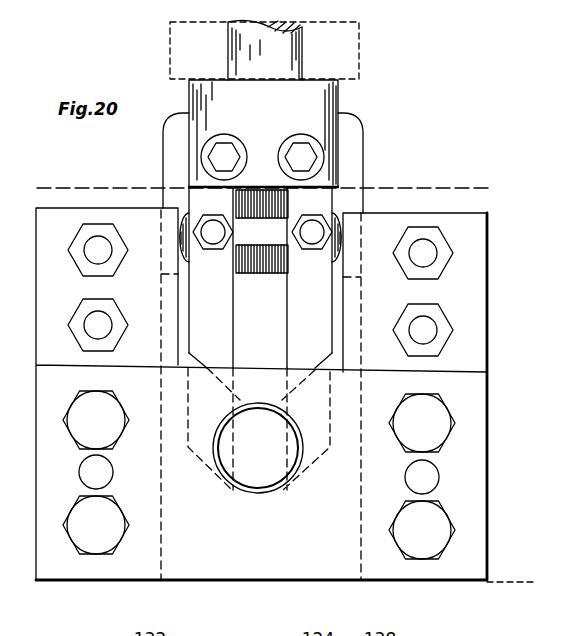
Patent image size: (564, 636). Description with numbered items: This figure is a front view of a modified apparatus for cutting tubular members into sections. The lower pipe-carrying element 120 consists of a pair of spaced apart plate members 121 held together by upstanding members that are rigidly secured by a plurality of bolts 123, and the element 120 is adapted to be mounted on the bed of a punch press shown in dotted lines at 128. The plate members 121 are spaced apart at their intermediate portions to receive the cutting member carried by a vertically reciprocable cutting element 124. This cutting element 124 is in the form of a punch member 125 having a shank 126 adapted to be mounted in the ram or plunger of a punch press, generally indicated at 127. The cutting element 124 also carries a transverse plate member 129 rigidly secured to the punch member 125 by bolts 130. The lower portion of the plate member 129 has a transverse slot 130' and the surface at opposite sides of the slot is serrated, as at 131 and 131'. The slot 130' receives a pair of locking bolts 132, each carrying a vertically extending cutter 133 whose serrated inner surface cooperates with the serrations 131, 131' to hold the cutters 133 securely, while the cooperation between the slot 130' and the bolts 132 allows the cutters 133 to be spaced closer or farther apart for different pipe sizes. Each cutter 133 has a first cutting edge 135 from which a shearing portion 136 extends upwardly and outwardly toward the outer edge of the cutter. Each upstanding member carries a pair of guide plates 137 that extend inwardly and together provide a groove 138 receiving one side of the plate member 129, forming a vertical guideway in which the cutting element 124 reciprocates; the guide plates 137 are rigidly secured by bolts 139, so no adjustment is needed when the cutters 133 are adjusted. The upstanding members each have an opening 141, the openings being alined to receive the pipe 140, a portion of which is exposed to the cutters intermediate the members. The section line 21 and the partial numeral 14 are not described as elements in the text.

The section line 21- 21 is at (494, 179).
The lower pipe-carrying element 120 is at (492, 505).
The plate members 121 is at (472, 470).
The bolts 123 is at (75, 437).
The cutting element 124 is at (349, 109).
The punch member 125 is at (340, 90).
The shank 126 is at (300, 26).
The ram or plunger of a punch press 127 is at (360, 32).
The bed of a punch press 128 is at (514, 585).
The transverse plate member 129 is at (362, 146).
The bolts 130 is at (262, 149).
The transverse slot 130' is at (252, 277).
The serrations 131 is at (262, 190).
The serrations 131' is at (281, 279).
The locking bolts 132 is at (213, 230).
The cutter 133 is at (289, 344).
The first cutting edge 135 is at (261, 384).
The shearing portion 136 is at (185, 364).
The guide plates 137 is at (479, 233).
The groove 138 is at (167, 243).
The bolts 139 is at (80, 262).
The pipe 140 is at (265, 489).
The opening 141 is at (247, 489).
The partial numeral 14 is at (555, 280).